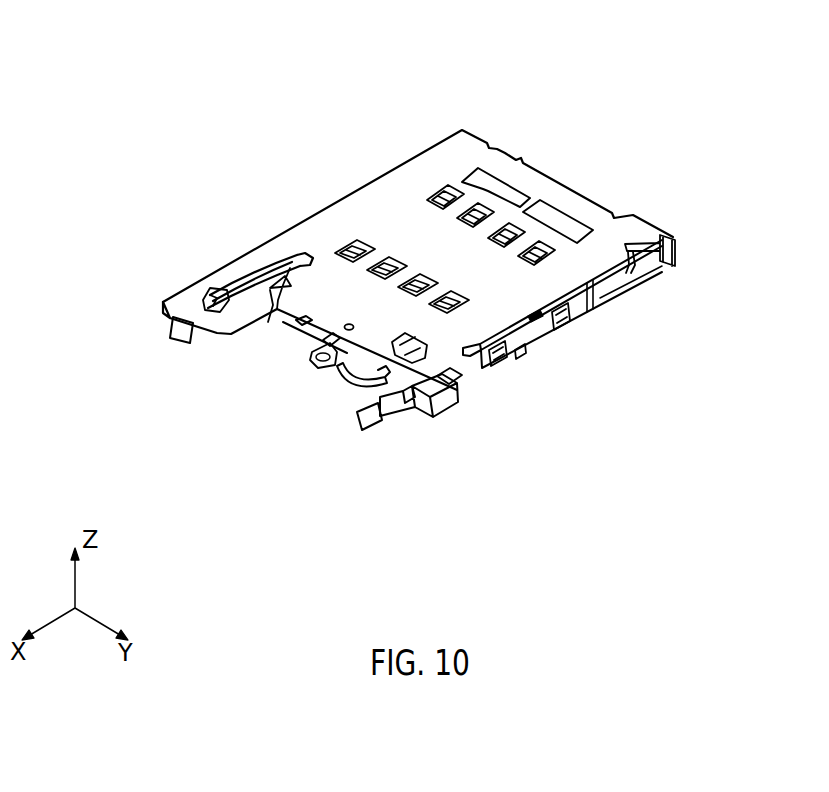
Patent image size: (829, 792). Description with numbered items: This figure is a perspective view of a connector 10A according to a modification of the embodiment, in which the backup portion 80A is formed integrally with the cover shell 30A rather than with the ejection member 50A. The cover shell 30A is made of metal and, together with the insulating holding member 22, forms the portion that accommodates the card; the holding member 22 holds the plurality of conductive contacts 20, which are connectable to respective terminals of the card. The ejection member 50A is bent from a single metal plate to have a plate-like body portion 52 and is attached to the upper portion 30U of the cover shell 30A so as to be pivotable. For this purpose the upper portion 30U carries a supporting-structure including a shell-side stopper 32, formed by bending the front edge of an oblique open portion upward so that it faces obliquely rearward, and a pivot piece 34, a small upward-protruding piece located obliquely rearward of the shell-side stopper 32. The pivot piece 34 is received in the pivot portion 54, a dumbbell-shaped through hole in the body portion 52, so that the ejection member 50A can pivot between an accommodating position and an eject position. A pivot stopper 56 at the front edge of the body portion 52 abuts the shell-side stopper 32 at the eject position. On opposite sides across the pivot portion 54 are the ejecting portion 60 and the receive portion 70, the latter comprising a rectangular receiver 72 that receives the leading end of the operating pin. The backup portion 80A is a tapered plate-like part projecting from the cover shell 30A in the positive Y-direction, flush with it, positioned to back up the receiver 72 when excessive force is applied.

The connector 10A is at (508, 132).
The cover shell 30A is at (527, 173).
The upper portion 30U is at (418, 232).
The contacts 20 is at (356, 241).
The holding member 22 is at (366, 240).
The pivot stopper 56 is at (348, 350).
The ejecting portion 60 is at (281, 316).
The shell-side stopper 32 is at (302, 337).
The pivot piece 34 is at (337, 377).
The pivot portion 54 is at (363, 382).
The receive portion 70 is at (447, 410).
The receiver 72 is at (459, 380).
The backup portion 80A is at (465, 355).
The ejection member 50A is at (336, 305).
The body portion 52 is at (561, 316).